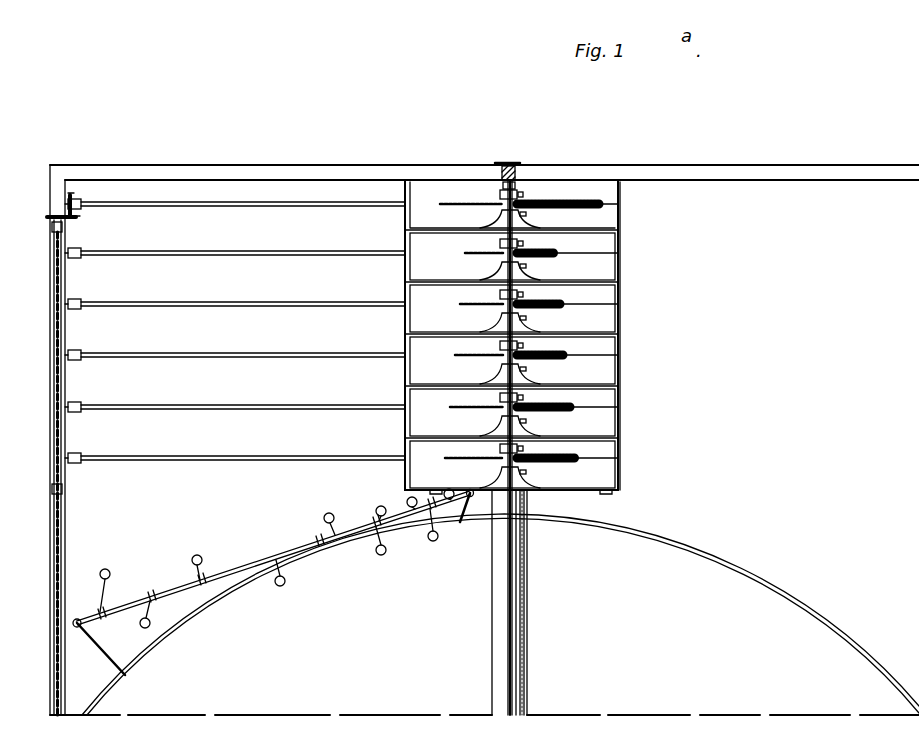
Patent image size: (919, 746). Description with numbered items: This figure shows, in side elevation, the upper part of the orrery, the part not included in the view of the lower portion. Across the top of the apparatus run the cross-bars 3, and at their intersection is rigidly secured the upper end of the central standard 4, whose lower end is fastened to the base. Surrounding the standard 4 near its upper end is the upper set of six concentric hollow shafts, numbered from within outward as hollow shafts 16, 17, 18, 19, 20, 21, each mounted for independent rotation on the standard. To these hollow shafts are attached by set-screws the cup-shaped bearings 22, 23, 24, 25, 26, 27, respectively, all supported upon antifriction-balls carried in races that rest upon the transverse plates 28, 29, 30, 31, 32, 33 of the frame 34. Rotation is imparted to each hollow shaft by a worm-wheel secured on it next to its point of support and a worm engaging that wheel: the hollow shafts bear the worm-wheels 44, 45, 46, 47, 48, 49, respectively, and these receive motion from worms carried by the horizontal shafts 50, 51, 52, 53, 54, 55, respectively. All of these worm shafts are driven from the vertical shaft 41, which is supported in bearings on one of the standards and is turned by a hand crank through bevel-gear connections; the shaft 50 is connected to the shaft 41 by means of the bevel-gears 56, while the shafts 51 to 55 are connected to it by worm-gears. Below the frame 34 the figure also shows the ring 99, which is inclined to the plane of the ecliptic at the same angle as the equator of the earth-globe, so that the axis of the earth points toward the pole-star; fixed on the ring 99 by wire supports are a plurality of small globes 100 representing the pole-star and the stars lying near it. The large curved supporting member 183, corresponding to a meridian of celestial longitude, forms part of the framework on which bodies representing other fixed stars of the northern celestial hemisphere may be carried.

The cross-bars 3 is at (803, 181).
The standard 4 is at (510, 163).
The hollow shaft 16 is at (500, 213).
The hollow shaft 17 is at (500, 262).
The hollow shaft 18 is at (500, 313).
The hollow shaft 19 is at (500, 364).
The hollow shaft 20 is at (500, 416).
The hollow shaft 21 is at (500, 467).
The cup-shaped bearing 22 is at (538, 228).
The cup-shaped bearing 23 is at (538, 279).
The cup-shaped bearing 24 is at (538, 330).
The cup-shaped bearing 25 is at (538, 381).
The cup-shaped bearing 26 is at (538, 433).
The cup-shaped bearing 27 is at (538, 485).
The transverse plate 28 is at (612, 232).
The transverse plate 29 is at (603, 283).
The transverse plate 30 is at (603, 335).
The transverse plate 31 is at (603, 387).
The transverse plate 32 is at (603, 439).
The transverse plate 33 is at (600, 491).
The frame 34 is at (619, 340).
The shaft 41 is at (63, 510).
The worm-wheel 44 is at (618, 203).
The worm-wheel 45 is at (618, 253).
The worm-wheel 46 is at (618, 306).
The worm-wheel 47 is at (618, 358).
The worm-wheel 48 is at (618, 409).
The worm-wheel 49 is at (618, 462).
The shaft 50 is at (251, 206).
The shaft 51 is at (256, 255).
The shaft 52 is at (256, 306).
The shaft 53 is at (256, 357).
The shaft 54 is at (251, 409).
The shaft 55 is at (244, 460).
The bevel-gears 56 is at (78, 220).
The ring 99 is at (298, 549).
The small globes 100 is at (201, 560).
The curved supporting members 183 is at (245, 583).